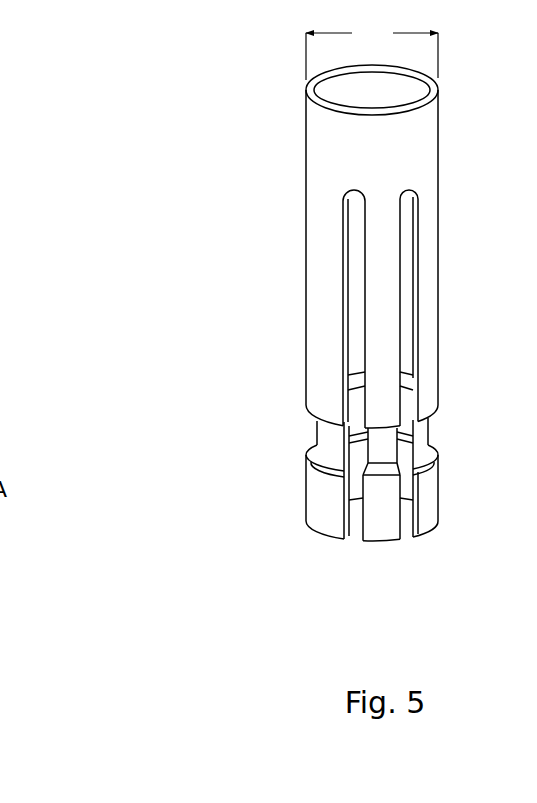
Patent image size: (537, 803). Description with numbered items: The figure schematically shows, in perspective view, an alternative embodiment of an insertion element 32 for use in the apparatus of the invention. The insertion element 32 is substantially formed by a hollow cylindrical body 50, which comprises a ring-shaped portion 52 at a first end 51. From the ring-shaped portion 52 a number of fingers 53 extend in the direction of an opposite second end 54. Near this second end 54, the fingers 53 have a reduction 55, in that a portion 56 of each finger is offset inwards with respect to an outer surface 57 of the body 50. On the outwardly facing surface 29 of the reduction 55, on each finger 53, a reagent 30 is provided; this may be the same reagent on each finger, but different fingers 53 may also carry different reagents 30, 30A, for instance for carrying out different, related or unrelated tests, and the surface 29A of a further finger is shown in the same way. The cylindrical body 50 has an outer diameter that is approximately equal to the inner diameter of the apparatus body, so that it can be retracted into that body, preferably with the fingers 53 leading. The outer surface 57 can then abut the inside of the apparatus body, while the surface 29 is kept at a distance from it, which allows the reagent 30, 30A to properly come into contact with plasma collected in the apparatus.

The hollow cylindrical body 50 is at (440, 142).
The first end 51 is at (297, 67).
The ring-shaped portion 52 is at (323, 142).
The insertion element 32 is at (452, 84).
The outer surface 57 is at (441, 240).
The fingers 53 is at (353, 297).
The portion of finger 56 is at (316, 421).
The reduction 55 is at (434, 426).
The second end 54 is at (300, 538).
The reagent 30 is at (335, 444).
The outwardly facing surface 29 is at (328, 433).
The reagent 30A is at (379, 445).
The finger segment 29A is at (386, 450).